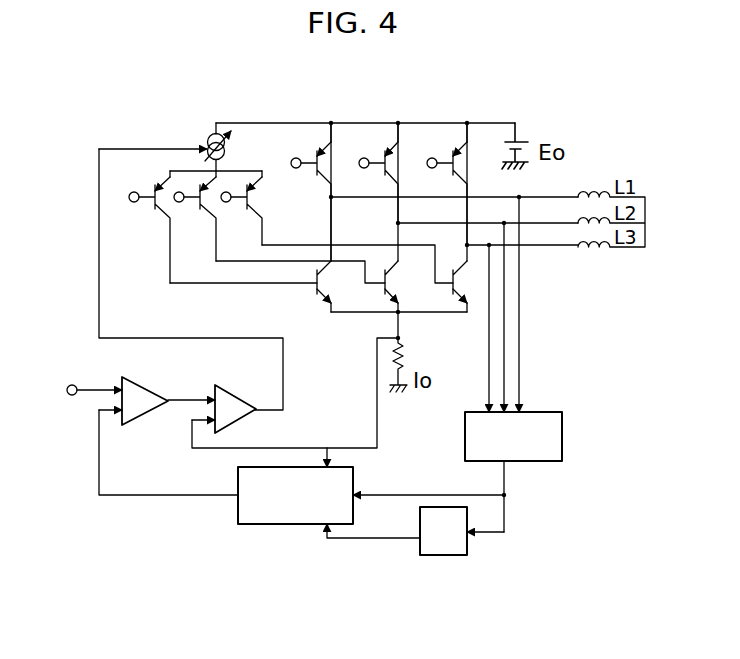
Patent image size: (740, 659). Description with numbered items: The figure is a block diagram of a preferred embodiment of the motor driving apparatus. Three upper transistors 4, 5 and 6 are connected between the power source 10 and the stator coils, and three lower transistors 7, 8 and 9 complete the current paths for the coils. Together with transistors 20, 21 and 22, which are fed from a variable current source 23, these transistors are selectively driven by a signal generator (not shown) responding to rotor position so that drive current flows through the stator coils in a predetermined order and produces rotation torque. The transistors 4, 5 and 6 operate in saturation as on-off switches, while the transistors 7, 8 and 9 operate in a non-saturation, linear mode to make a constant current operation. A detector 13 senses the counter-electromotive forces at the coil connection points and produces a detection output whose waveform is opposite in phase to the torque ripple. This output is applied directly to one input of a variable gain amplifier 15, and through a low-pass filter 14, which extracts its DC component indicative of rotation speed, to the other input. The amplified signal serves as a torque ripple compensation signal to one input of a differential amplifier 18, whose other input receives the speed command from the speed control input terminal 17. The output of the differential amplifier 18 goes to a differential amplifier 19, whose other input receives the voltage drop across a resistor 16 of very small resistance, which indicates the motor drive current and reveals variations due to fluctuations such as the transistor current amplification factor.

The transistor 4 is at (315, 152).
The transistor 5 is at (383, 152).
The transistor 6 is at (451, 152).
The transistor 7 is at (313, 298).
The transistor 8 is at (381, 298).
The transistor 9 is at (449, 298).
The power source 10 is at (518, 136).
The detector 13 is at (562, 414).
The low-pass filter 14 is at (443, 556).
The variable gain amplifier 15 is at (290, 525).
The resistor 16 is at (403, 353).
The speed control input terminal 17 is at (71, 384).
The differential amplifier 18 is at (147, 382).
The differential amplifier 19 is at (242, 390).
The transistor 20 is at (161, 213).
The transistor 21 is at (206, 213).
The transistor 22 is at (253, 213).
The variable current source 23 is at (209, 136).